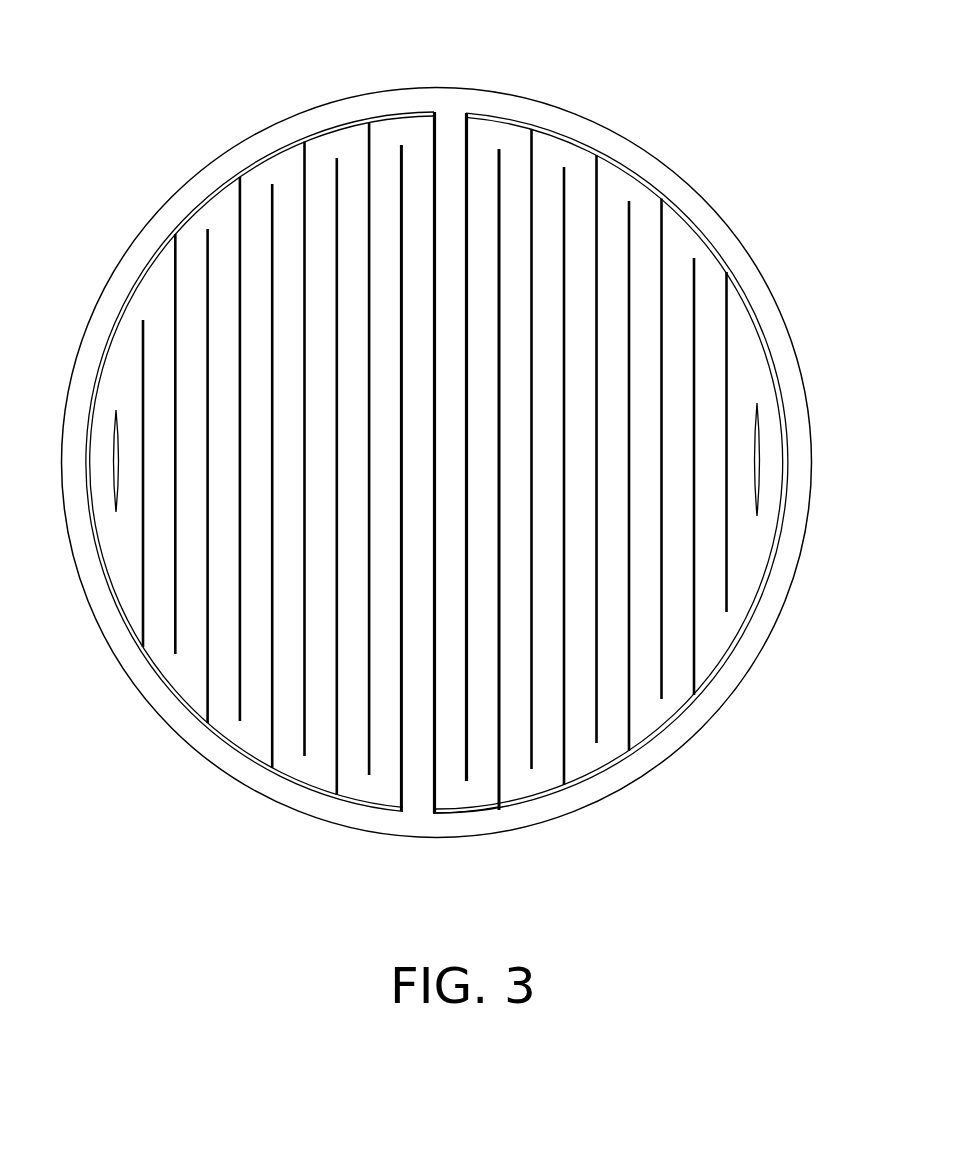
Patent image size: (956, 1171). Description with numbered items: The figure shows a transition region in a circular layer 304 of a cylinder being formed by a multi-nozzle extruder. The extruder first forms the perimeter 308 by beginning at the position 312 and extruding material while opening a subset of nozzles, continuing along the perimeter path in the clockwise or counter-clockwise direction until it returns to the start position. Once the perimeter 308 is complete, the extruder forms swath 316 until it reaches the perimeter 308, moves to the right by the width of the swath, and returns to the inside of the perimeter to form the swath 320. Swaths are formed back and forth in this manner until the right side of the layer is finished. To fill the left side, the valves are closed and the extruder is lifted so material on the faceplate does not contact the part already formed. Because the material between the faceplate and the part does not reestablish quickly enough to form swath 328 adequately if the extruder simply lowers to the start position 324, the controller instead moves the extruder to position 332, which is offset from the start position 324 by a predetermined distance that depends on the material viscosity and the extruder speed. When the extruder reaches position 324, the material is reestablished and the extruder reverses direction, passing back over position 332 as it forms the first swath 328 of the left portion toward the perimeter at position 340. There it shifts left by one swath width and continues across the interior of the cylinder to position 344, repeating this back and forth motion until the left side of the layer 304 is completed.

The layer 304 is at (714, 120).
The perimeter 308 is at (545, 102).
The position 312 is at (432, 97).
The swath 316 is at (452, 122).
The swath 320 is at (483, 772).
The start position 324 is at (418, 805).
The swath 328 is at (432, 754).
The position 332 is at (423, 792).
The position 340 is at (421, 135).
The position 344 is at (387, 792).